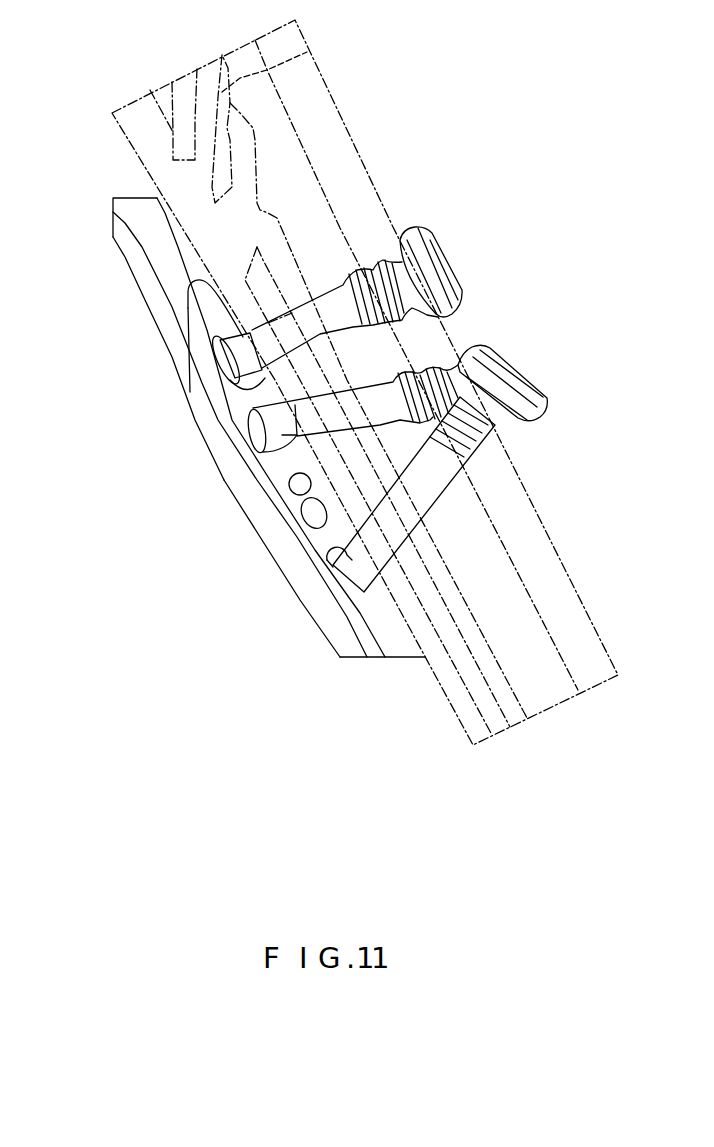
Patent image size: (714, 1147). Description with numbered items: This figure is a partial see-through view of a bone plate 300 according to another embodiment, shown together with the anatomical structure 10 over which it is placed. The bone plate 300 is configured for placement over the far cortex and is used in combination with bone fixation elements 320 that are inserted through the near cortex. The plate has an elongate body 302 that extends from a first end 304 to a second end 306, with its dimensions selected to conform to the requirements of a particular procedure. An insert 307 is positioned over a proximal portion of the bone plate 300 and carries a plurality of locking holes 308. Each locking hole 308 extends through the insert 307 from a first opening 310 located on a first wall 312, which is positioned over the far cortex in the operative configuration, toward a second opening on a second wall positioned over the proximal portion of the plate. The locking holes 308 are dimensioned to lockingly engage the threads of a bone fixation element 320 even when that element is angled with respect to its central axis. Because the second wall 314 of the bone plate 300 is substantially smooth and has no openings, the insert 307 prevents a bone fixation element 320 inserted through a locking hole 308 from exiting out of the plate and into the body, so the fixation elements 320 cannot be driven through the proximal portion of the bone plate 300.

The instrument board / base member 10 is at (323, 113).
The bone plate 300 is at (215, 430).
The elongate body 302 is at (160, 317).
The first end 304 is at (113, 198).
The second end 306 is at (340, 658).
The insert 307 is at (280, 453).
The locking holes 308 is at (250, 408).
The first opening 310 is at (327, 550).
The first wall 312 is at (360, 597).
The second wall 314 is at (293, 598).
The bone fixation elements 320 is at (512, 358).